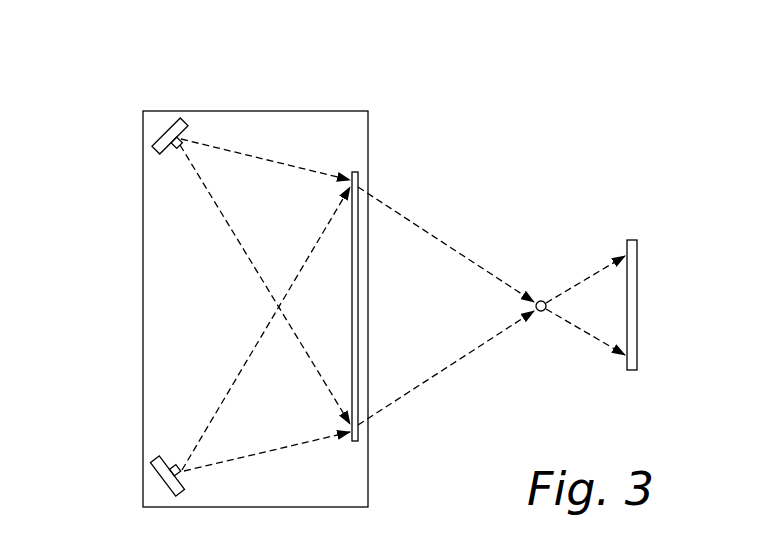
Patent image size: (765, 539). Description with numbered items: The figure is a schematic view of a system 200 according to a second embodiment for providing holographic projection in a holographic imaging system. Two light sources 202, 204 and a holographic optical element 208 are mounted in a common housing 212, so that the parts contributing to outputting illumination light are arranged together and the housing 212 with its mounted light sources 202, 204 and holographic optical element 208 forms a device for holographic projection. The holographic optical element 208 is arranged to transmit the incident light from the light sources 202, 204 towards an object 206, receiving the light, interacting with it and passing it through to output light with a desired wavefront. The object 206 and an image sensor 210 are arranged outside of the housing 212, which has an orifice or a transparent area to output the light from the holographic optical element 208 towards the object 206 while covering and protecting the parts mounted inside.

The system 200 is at (118, 63).
The light source 202 is at (160, 140).
The light source 204 is at (160, 482).
The object 206 is at (540, 300).
The holographic optical element 208 is at (357, 204).
The image sensor 210 is at (633, 240).
The housing 212 is at (143, 333).